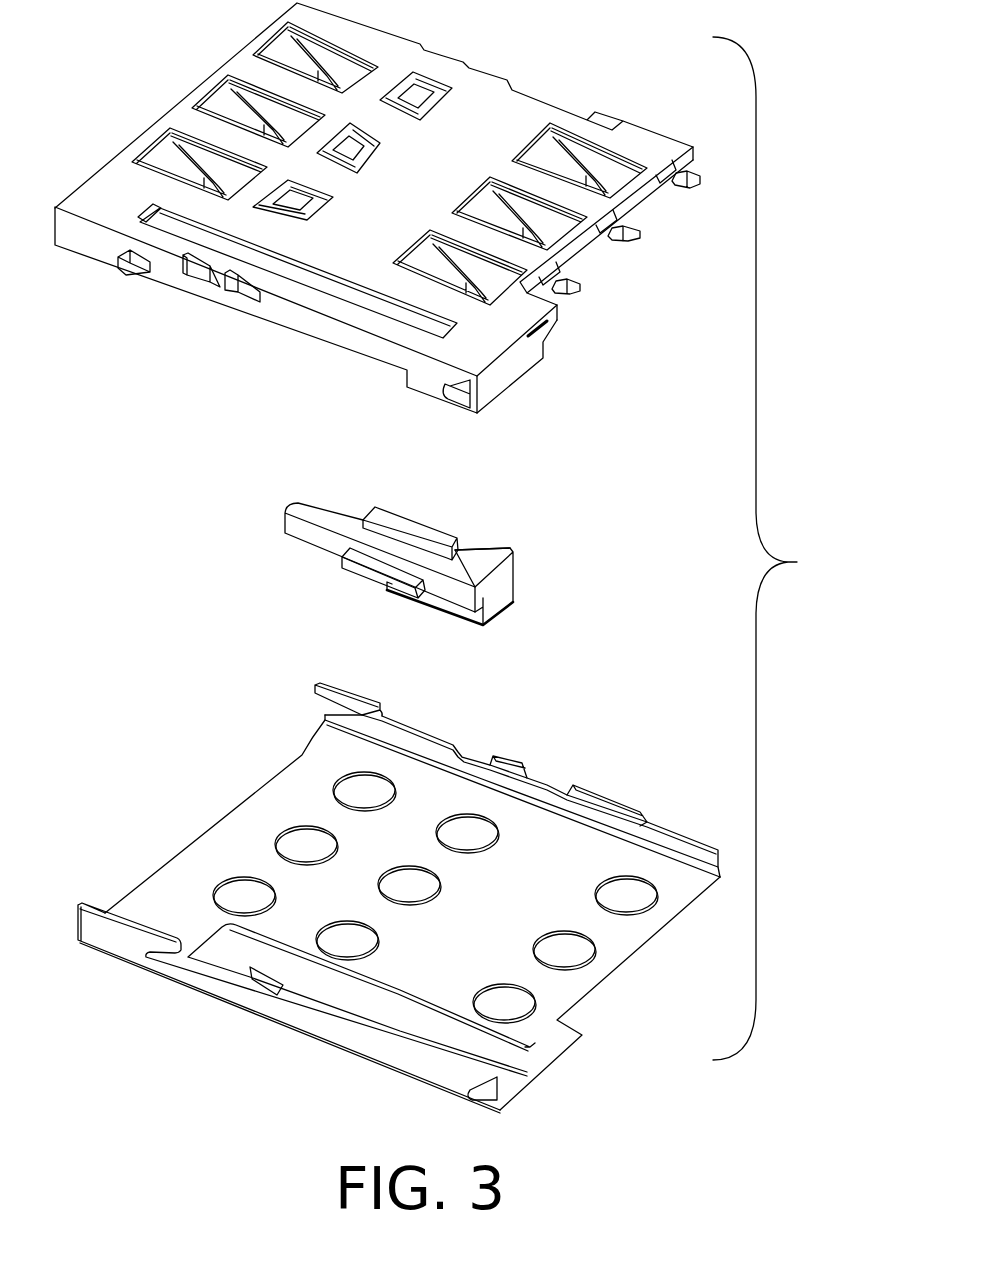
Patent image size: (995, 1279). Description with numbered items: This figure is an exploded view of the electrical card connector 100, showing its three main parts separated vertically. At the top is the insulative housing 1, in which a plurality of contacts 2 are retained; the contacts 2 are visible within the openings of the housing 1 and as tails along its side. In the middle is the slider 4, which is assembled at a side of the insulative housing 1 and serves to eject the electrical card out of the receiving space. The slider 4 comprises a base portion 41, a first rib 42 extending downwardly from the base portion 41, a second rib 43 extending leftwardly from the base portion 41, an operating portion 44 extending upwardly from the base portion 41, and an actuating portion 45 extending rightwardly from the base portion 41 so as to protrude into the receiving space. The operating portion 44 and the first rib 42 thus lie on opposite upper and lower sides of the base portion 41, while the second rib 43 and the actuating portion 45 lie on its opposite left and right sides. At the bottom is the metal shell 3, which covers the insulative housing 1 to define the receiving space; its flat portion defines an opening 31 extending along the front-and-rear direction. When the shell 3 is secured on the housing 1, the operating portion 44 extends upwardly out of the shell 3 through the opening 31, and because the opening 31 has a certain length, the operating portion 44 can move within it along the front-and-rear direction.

The electrical card connector 100 is at (782, 548).
The insulative housing 1 is at (500, 117).
The contacts 2 is at (637, 237).
The metal shell 3 is at (399, 898).
The opening 31 is at (508, 1047).
The slider 4 is at (416, 548).
The base portion 41 is at (470, 568).
The first rib 42 is at (410, 528).
The second rib 43 is at (363, 572).
The operating portion 44 is at (455, 613).
The actuating portion 45 is at (483, 548).